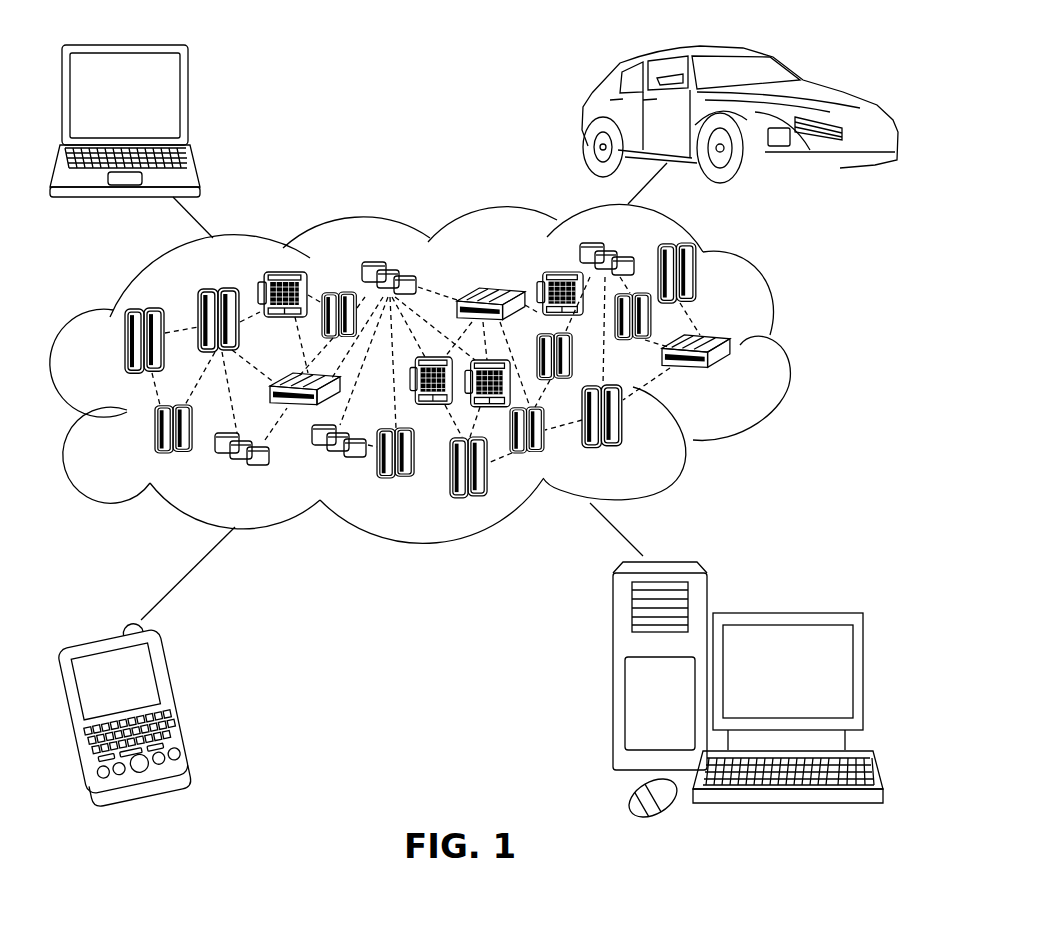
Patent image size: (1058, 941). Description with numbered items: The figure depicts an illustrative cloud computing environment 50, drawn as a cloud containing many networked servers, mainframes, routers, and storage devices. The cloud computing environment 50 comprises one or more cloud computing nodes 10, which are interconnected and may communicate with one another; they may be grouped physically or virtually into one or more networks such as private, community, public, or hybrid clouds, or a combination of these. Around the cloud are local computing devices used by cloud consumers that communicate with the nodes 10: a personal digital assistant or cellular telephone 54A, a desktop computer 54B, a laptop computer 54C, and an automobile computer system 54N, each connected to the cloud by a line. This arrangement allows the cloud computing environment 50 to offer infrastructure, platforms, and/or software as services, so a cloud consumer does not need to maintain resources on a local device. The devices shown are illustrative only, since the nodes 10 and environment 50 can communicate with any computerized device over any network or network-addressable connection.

The cloud computing node 10 is at (732, 378).
The cloud computing environment 50 is at (783, 347).
The personal digital assistant or cellular telephone 54A is at (180, 698).
The desktop computer 54B is at (783, 613).
The laptop computer 54C is at (188, 102).
The automobile computer system 54N is at (586, 115).